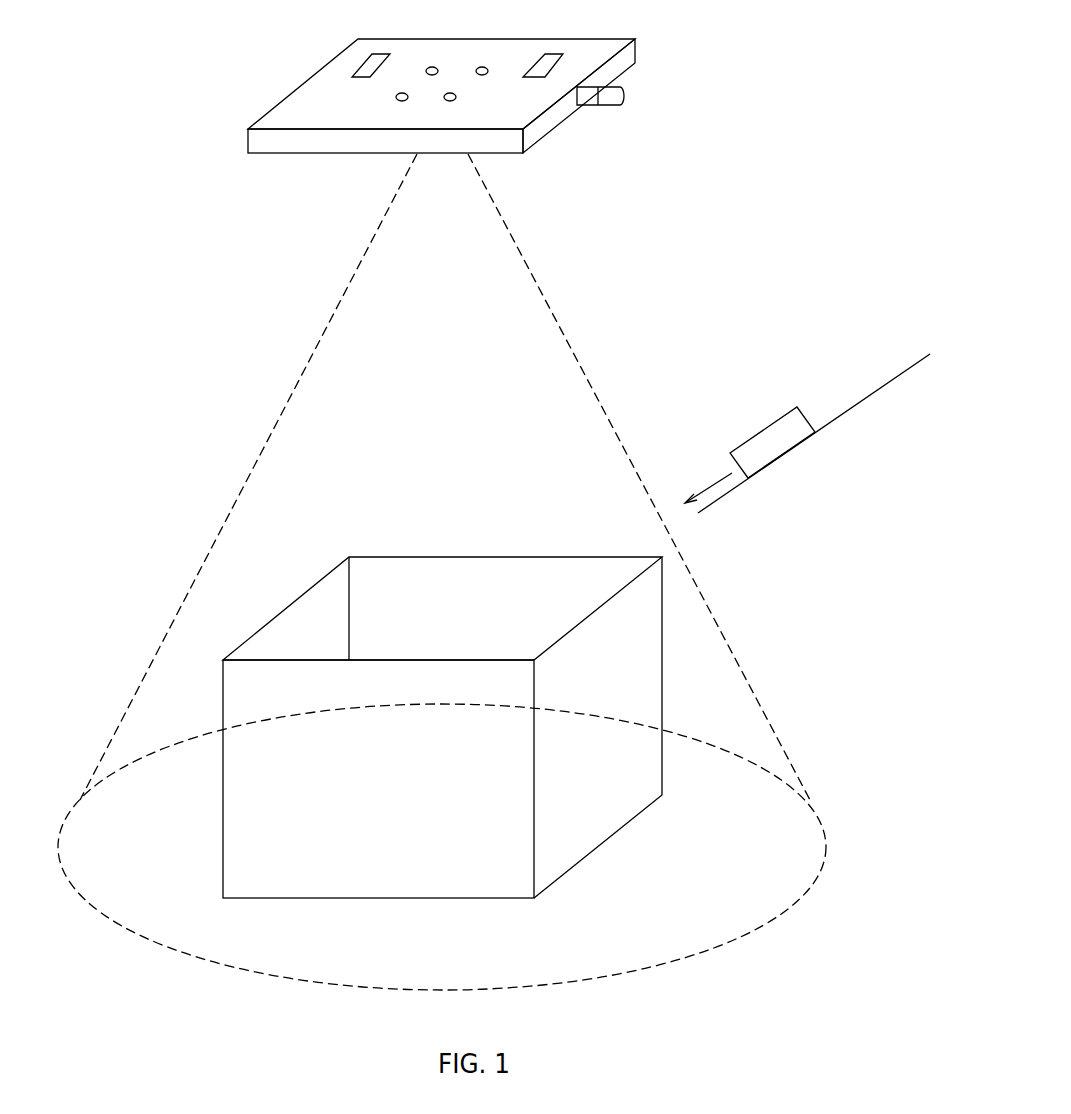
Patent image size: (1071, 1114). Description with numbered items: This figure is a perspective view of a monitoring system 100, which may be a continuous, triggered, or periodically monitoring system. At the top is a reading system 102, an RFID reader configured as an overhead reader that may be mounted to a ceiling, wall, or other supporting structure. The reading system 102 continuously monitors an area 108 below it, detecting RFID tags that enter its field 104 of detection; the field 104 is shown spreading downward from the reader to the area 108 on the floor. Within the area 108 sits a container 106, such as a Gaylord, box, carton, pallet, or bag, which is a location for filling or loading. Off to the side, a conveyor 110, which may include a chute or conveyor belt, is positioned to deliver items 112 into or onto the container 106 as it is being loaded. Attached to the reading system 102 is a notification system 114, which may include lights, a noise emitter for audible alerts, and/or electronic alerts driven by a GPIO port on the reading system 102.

The monitoring system 100 is at (246, 348).
The reading system 102 is at (625, 39).
The field 104 is at (550, 308).
The container 106 is at (663, 683).
The area 108 is at (770, 903).
The conveyor 110 is at (828, 425).
The items 112 is at (803, 407).
The notification system 114 is at (625, 93).